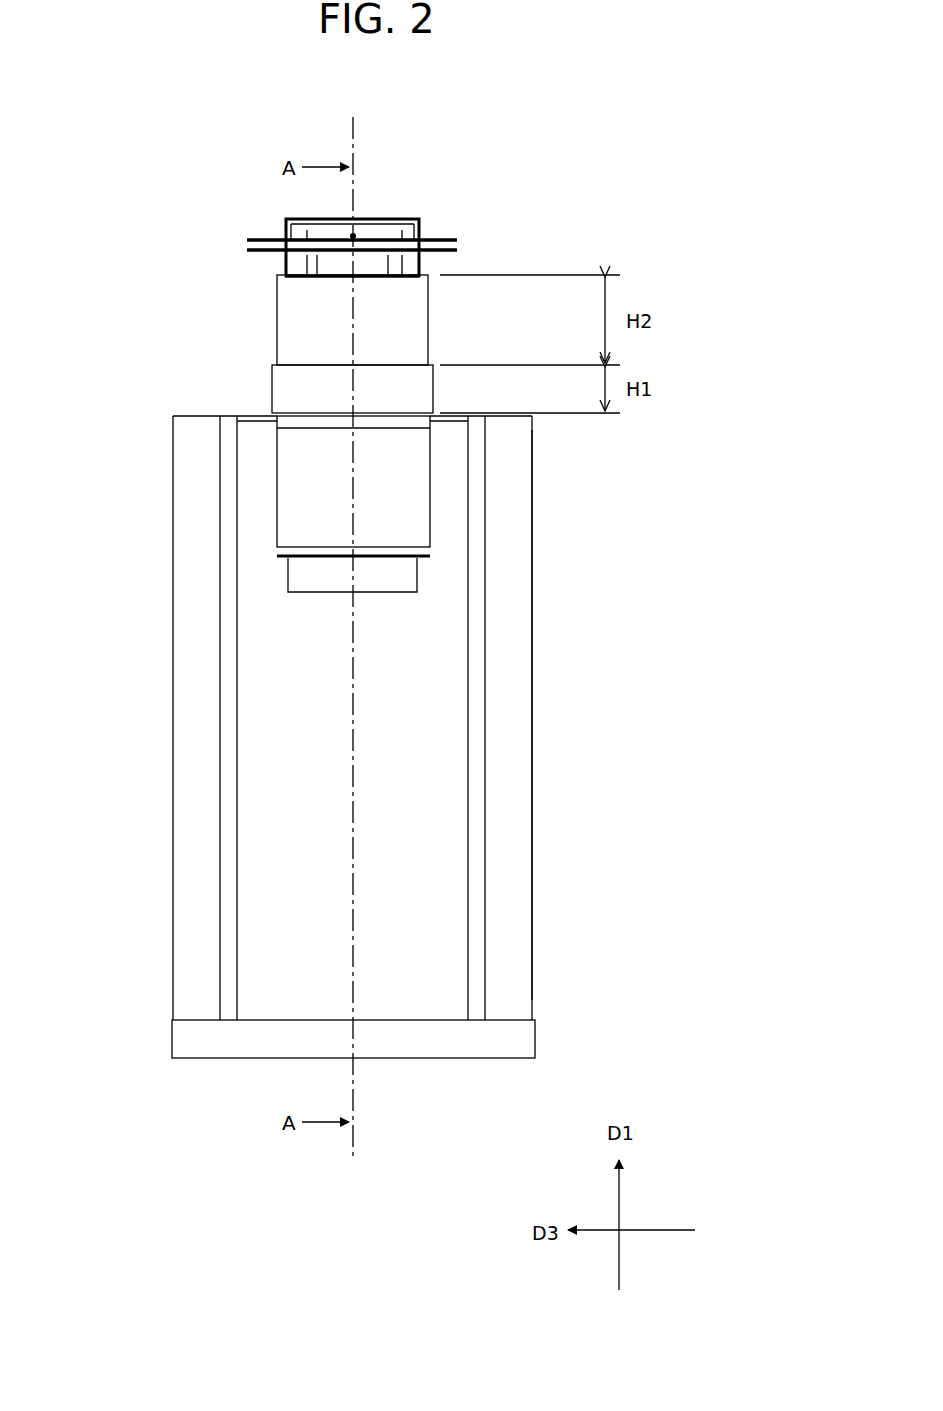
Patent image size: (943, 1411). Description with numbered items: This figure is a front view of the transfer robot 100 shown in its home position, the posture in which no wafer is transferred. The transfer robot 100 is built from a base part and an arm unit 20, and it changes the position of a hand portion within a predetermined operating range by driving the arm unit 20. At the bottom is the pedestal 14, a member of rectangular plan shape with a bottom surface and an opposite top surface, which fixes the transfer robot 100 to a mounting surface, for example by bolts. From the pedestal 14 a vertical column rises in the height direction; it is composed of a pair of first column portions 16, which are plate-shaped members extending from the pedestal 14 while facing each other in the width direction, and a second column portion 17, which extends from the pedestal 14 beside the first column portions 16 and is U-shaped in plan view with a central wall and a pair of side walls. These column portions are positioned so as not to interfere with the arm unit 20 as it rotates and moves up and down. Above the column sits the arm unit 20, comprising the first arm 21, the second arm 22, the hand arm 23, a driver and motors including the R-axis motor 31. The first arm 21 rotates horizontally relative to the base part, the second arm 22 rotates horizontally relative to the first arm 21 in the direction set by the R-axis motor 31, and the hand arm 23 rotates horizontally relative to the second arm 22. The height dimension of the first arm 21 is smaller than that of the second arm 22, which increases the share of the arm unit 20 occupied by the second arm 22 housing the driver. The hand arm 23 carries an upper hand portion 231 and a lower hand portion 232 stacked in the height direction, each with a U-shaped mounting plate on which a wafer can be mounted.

The transfer robot 100 is at (563, 211).
The pedestal 14 is at (509, 1020).
The first column portions 16 is at (220, 795).
The second column portion 17 is at (508, 517).
The arm unit 20 is at (249, 199).
The first arm 21 is at (272, 390).
The second arm 22 is at (277, 323).
The hand arm 23 is at (110, 197).
The upper hand portion 231 is at (250, 240).
The lower hand portion 232 is at (248, 250).
The R-axis motor 31 is at (277, 503).